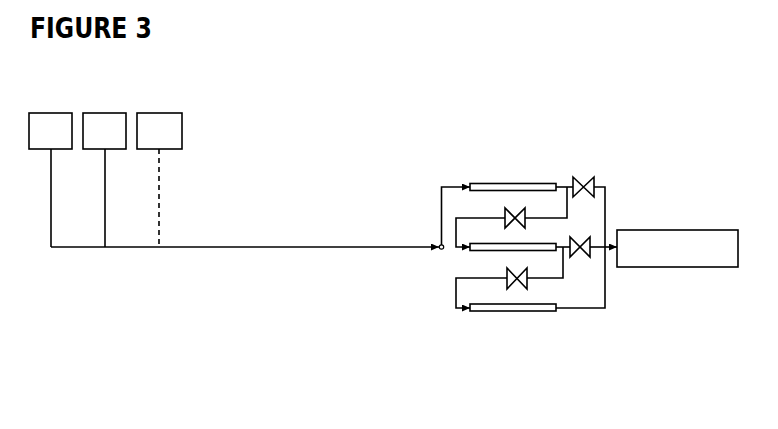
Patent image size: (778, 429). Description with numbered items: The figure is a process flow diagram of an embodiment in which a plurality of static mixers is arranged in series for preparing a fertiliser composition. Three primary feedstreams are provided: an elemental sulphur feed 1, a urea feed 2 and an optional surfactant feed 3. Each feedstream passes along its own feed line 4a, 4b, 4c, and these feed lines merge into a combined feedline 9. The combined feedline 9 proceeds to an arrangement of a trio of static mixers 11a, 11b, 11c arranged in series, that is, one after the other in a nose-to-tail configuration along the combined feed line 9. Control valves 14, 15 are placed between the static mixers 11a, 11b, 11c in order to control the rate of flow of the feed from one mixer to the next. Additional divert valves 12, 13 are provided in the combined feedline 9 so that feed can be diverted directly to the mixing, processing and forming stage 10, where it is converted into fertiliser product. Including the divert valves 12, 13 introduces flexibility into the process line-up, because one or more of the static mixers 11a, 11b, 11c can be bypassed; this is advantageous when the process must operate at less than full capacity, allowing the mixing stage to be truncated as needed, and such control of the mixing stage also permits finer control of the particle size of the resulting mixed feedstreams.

The elemental sulphur feed 1 is at (50, 131).
The urea feed 2 is at (104, 131).
The surfactant feed 3 is at (159, 131).
The feed line 4a is at (64, 198).
The feed line 4b is at (125, 198).
The feed line 4c is at (187, 198).
The combined feedline 9 is at (247, 263).
The mixing, processing and forming stage 10 is at (677, 248).
The static mixer 11a is at (565, 193).
The static mixer 11b is at (578, 262).
The static mixer 11c is at (566, 344).
The divert valve 12 is at (659, 187).
The divert valve 13 is at (655, 257).
The control valve 14 is at (580, 223).
The control valve 15 is at (583, 292).